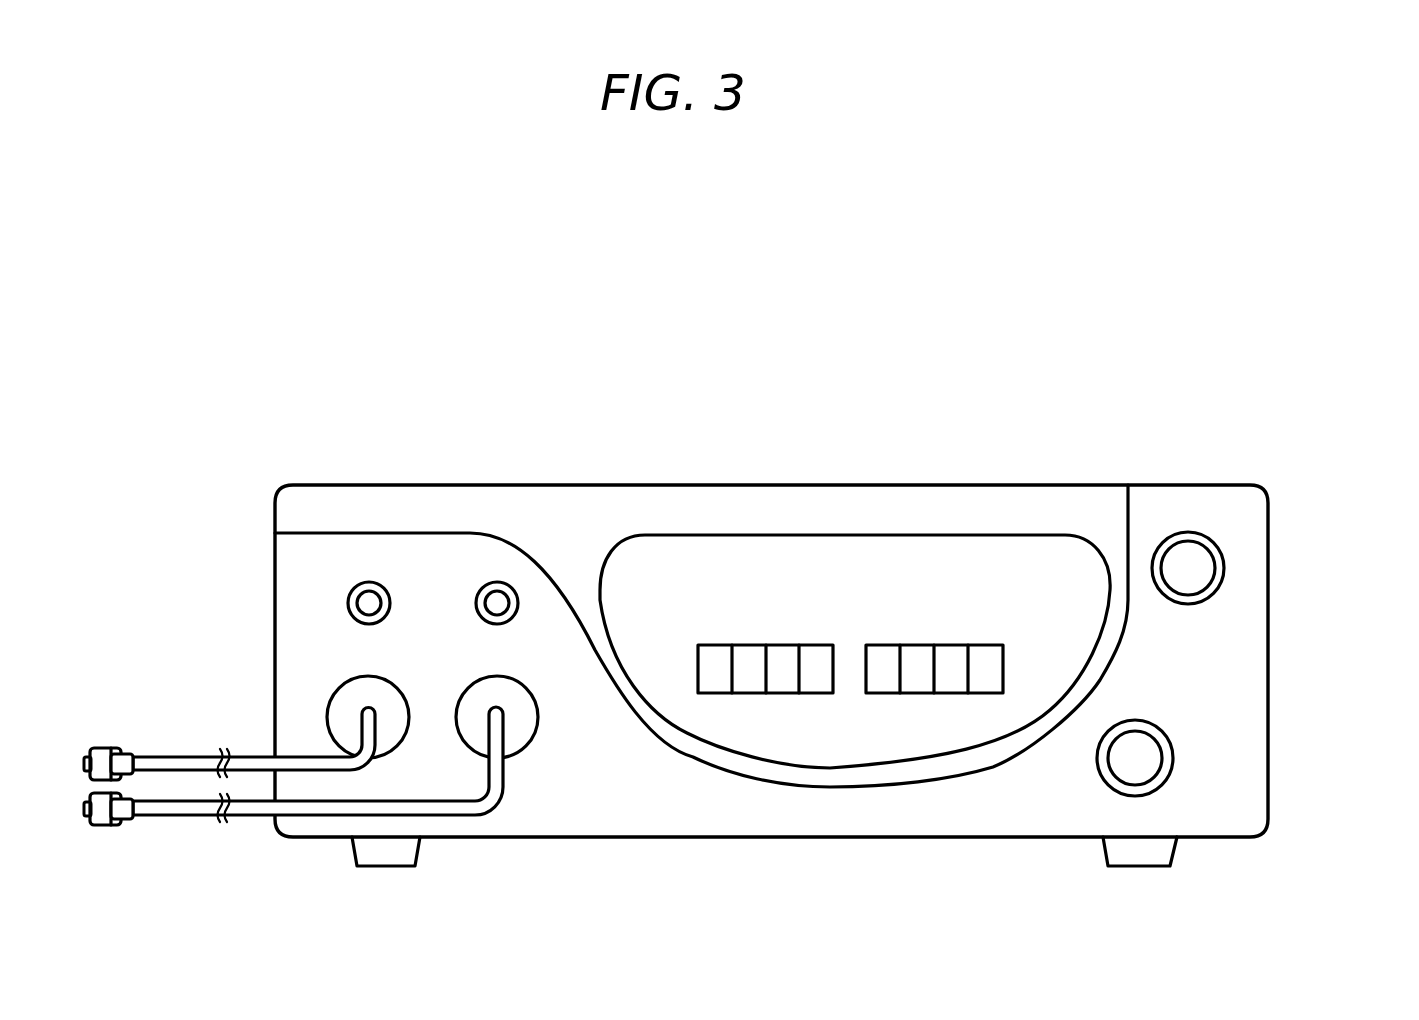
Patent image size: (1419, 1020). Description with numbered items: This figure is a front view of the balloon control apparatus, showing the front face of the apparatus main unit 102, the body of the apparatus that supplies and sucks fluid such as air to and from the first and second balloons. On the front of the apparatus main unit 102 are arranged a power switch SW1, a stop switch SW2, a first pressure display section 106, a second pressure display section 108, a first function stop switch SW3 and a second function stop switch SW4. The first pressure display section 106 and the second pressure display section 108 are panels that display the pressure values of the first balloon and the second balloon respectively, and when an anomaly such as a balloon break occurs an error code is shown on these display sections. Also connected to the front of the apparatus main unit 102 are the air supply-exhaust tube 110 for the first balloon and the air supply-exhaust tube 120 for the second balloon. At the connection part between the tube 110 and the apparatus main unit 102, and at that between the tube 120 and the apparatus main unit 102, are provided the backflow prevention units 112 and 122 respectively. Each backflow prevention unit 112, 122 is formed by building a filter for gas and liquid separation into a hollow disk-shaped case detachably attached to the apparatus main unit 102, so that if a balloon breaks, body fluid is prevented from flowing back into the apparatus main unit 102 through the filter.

The apparatus main unit 102 is at (783, 485).
The first pressure display section 106 is at (910, 697).
The second pressure display section 108 is at (782, 697).
The air supply-exhaust tube 110 is at (240, 822).
The backflow prevention unit 112 is at (513, 737).
The air supply-exhaust tube 120 is at (238, 755).
The backflow prevention unit 122 is at (342, 692).
The power switch SW1 is at (1150, 758).
The stop switch SW2 is at (1202, 570).
The first function stop switch SW3 is at (497, 590).
The second function stop switch SW4 is at (376, 590).